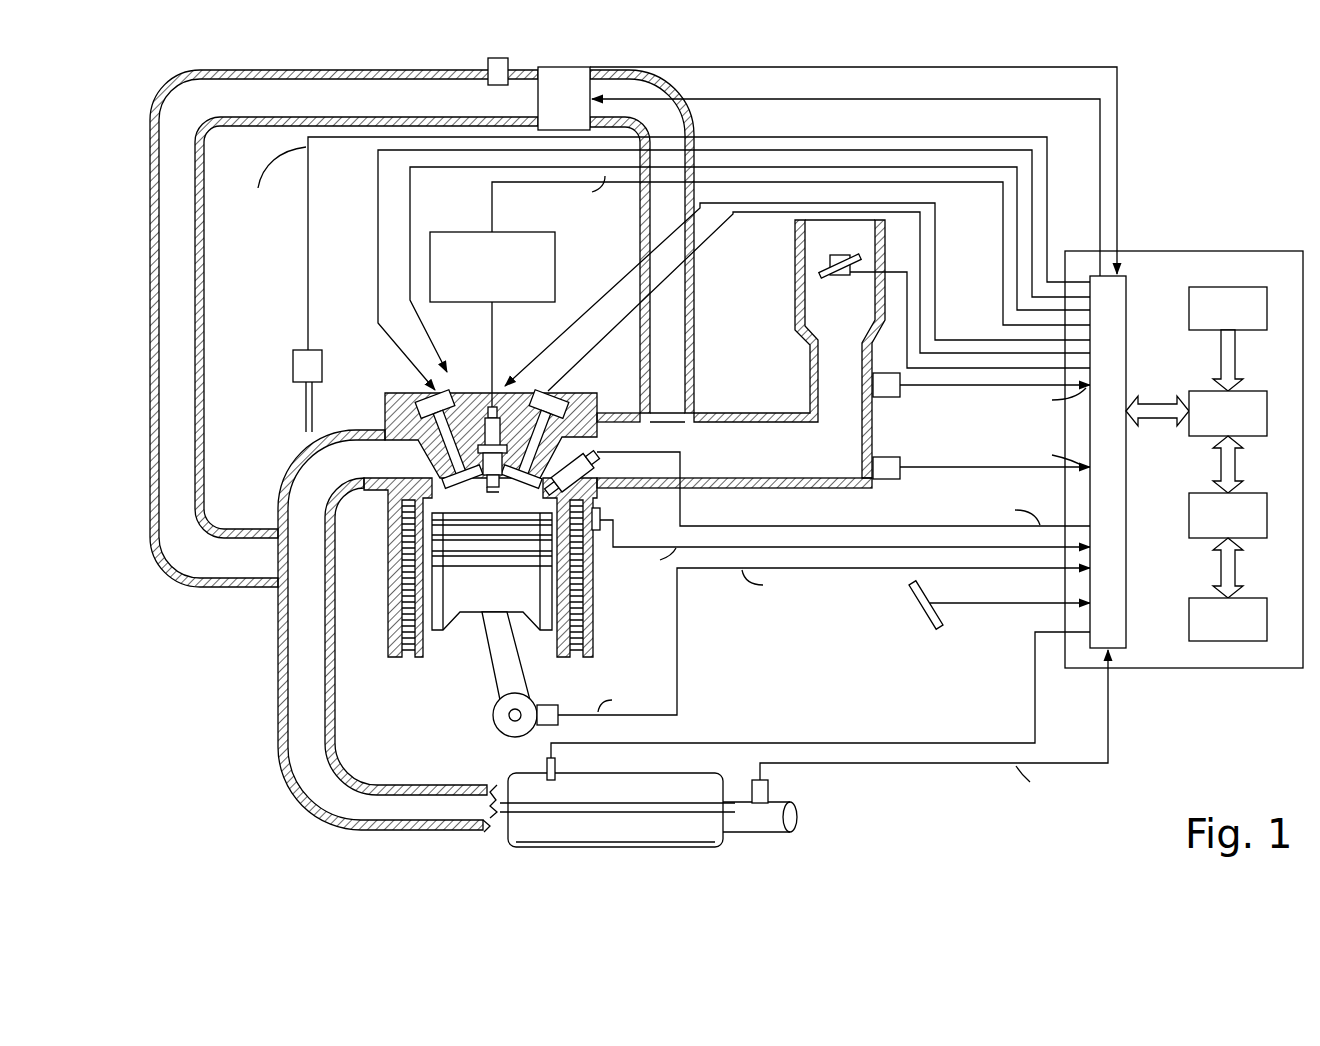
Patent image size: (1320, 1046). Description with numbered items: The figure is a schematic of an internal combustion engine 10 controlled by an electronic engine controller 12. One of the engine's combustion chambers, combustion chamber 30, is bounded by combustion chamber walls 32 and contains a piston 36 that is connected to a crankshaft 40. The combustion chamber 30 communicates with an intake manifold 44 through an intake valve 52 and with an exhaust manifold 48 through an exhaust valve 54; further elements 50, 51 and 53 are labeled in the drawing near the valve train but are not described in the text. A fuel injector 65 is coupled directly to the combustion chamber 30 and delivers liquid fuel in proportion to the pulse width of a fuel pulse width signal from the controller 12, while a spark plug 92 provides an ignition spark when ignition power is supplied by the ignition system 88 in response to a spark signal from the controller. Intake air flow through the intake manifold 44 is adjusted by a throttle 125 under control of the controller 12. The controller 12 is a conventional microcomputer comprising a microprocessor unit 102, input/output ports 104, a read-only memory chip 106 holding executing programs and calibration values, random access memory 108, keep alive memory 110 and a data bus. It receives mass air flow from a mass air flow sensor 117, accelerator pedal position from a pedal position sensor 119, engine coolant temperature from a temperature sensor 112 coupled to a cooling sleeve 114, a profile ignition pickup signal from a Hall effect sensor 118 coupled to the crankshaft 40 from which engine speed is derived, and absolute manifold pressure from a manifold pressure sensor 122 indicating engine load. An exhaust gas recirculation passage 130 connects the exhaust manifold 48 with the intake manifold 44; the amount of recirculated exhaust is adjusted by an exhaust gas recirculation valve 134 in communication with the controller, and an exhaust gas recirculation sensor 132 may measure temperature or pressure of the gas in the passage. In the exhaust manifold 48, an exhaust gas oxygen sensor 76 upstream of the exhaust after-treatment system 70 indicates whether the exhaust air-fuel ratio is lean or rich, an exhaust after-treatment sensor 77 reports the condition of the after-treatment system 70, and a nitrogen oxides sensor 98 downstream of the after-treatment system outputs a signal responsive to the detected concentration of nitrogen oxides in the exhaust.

The internal combustion engine 10 is at (395, 388).
The electronic engine controller 12 is at (1267, 251).
The combustion chamber 30 is at (483, 498).
The combustion chamber walls 32 is at (428, 650).
The piston 36 is at (494, 598).
The crankshaft 40 is at (498, 718).
The intake manifold 44 is at (792, 465).
The exhaust manifold 48 is at (307, 493).
The electric valve actuator 50 is at (452, 383).
The electric valve actuator 51 is at (528, 387).
The intake valve 52 is at (547, 470).
The intake valve 53 is at (734, 270).
The exhaust valve 54 is at (433, 473).
The fuel injector 65 is at (600, 457).
The exhaust after-treatment system 70 is at (654, 776).
The exhaust gas oxygen sensor 76 is at (317, 352).
The exhaust after-treatment sensor 77 is at (546, 766).
The ignition system 88 is at (508, 233).
The spark plug 92 is at (485, 403).
The NOx sensor 98 is at (772, 790).
The microprocessor unit 102 is at (1243, 391).
The input/output ports 104 is at (1130, 317).
The read-only memory chip 106 is at (1243, 290).
The random access memory 108 is at (1243, 493).
The keep alive memory 110 is at (1243, 598).
The temperature sensor 112 is at (602, 512).
The cooling sleeve 114 is at (407, 658).
The mass air flow sensor 117 is at (900, 397).
The Hall effect sensor 118 is at (548, 707).
The pedal position sensor 119 is at (918, 618).
The manifold pressure sensor 122 is at (893, 480).
The throttle 125 is at (825, 250).
The EGR passage 130 is at (303, 92).
The EGR sensor 132 is at (486, 66).
The EGR valve 134 is at (582, 111).